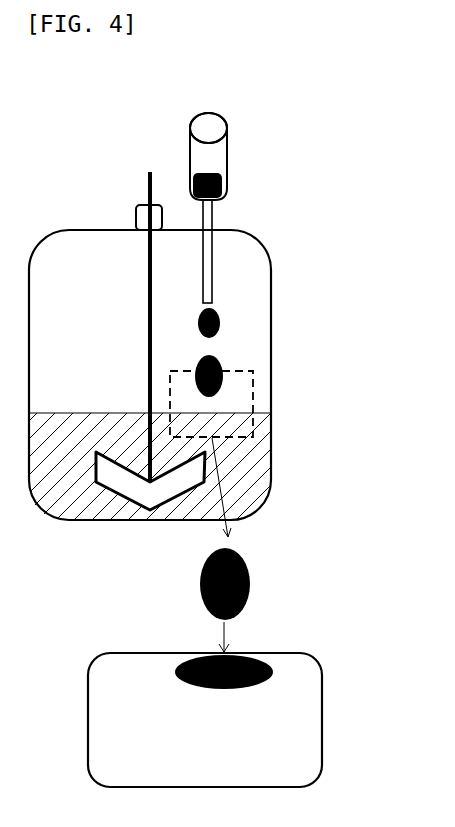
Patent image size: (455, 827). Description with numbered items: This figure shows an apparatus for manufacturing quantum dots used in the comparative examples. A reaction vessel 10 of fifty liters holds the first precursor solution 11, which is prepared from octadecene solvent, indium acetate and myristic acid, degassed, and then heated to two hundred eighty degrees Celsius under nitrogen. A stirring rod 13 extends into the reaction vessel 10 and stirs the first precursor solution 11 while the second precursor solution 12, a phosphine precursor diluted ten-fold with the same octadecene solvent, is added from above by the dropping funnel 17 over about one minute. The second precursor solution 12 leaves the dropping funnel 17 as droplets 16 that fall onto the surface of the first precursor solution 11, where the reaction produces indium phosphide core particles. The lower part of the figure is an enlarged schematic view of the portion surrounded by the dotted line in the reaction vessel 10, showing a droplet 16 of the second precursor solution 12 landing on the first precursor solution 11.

The reaction vessel 10 is at (272, 325).
The first precursor solution 11 is at (260, 482).
The second precursor solution 12 is at (218, 200).
The stirring rod 13 is at (148, 200).
The droplets 16 is at (218, 388).
The dropping funnel 17 is at (200, 132).